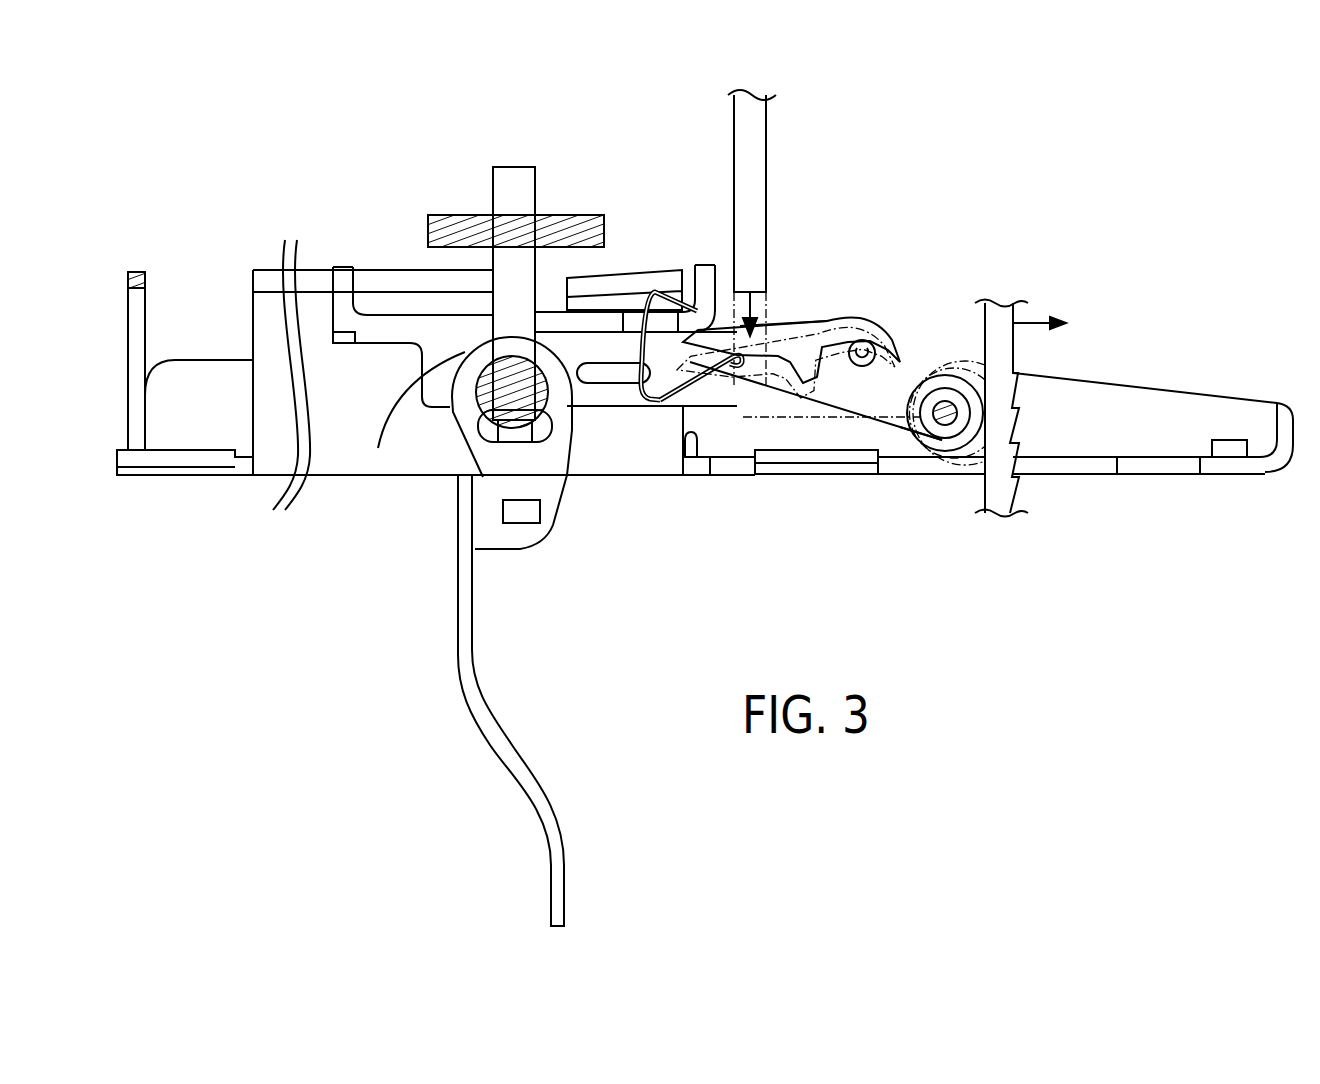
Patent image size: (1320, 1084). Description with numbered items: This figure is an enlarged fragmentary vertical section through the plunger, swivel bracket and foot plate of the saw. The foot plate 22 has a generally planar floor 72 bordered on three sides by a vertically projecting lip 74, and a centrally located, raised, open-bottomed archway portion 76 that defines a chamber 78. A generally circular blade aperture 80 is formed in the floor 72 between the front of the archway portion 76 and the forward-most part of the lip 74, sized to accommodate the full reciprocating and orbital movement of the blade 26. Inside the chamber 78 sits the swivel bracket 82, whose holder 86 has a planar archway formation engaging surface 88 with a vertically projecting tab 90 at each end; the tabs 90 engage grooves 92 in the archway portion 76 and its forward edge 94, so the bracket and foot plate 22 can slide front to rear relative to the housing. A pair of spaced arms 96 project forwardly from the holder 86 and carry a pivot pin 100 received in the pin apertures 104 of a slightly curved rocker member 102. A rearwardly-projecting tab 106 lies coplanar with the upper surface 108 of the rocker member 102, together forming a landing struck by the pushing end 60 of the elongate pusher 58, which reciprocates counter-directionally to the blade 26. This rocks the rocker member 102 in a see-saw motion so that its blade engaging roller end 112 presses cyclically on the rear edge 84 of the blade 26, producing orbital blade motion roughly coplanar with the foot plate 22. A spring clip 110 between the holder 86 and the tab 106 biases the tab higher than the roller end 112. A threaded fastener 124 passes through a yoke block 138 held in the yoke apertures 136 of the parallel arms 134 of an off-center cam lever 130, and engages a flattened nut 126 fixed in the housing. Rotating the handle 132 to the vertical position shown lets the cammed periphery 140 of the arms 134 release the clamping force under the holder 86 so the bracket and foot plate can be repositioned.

The foot plate 22 is at (1130, 397).
The reciprocating blade 26 is at (997, 316).
The pusher 58 is at (752, 120).
The pushing end 60 is at (761, 262).
The floor 72 is at (1077, 445).
The vertically projecting lip 74 is at (1245, 410).
The archway portion 76 is at (385, 283).
The chamber 78 is at (307, 318).
The blade aperture 80 is at (1040, 468).
The swivel bracket 82 is at (880, 296).
The rear edge 84 is at (980, 480).
The holder 86 is at (387, 323).
The archway formation engaging surface 88 is at (422, 293).
The tab 90 is at (347, 267).
The groove 92 is at (345, 346).
The forward edge 94 is at (745, 400).
The arm 96 is at (807, 320).
The pivot pin 100 is at (876, 344).
The rocker member 102 is at (840, 387).
The pin aperture 104 is at (860, 366).
The rearwardly-projecting tab 106 is at (660, 390).
The upper surface 108 is at (745, 405).
The spring clip 110 is at (640, 399).
The blade engaging roller end 112 is at (907, 427).
The threaded fastener 124 is at (512, 166).
The nut 126 is at (578, 215).
The cam lever 130 is at (458, 657).
The handle 132 is at (510, 761).
The arm 134 is at (507, 476).
The yoke aperture 136 is at (537, 517).
The yoke block 138 is at (456, 440).
The cammed periphery 140 is at (387, 323).